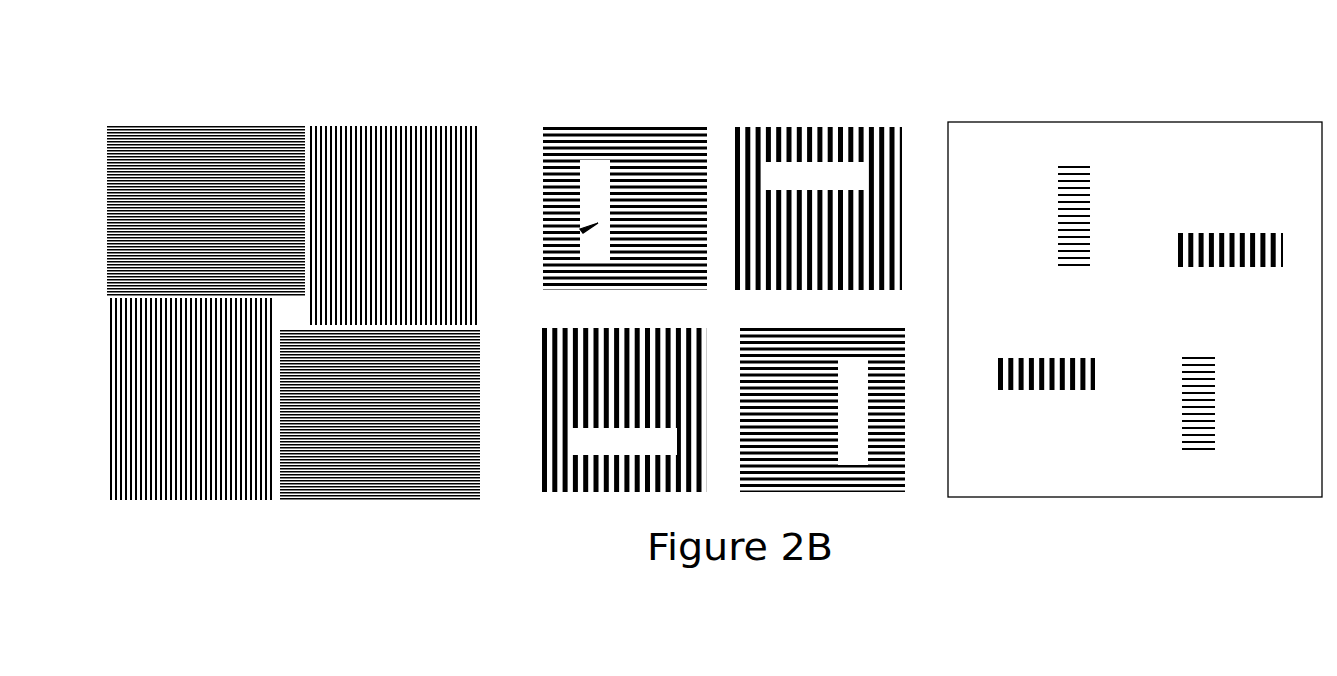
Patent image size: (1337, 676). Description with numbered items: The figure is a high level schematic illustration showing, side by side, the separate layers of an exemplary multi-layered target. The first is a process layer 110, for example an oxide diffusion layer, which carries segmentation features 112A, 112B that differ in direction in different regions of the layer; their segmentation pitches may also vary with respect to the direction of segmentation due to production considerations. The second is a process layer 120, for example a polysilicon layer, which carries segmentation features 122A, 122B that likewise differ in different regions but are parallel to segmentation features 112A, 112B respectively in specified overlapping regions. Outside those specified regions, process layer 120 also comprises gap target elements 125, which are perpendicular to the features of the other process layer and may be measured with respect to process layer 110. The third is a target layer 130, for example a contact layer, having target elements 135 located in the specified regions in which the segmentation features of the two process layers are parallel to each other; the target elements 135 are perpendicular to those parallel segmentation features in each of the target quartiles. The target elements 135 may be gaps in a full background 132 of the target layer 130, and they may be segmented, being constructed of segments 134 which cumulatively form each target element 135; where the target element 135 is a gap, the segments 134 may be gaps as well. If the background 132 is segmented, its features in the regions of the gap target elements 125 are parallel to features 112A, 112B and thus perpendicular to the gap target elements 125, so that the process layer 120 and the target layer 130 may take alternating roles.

The process layer 110 is at (160, 78).
The segmentation features 112A is at (228, 126).
The segmentation features 112B is at (363, 126).
The process layer 120 is at (638, 117).
The segmentation features 122A is at (543, 150).
The segmentation features 122B is at (902, 150).
The gap target elements 125 is at (580, 229).
The target layer 130 is at (997, 68).
The background 132 is at (1287, 158).
The segments 134 is at (1063, 167).
The target elements 135 is at (1097, 223).